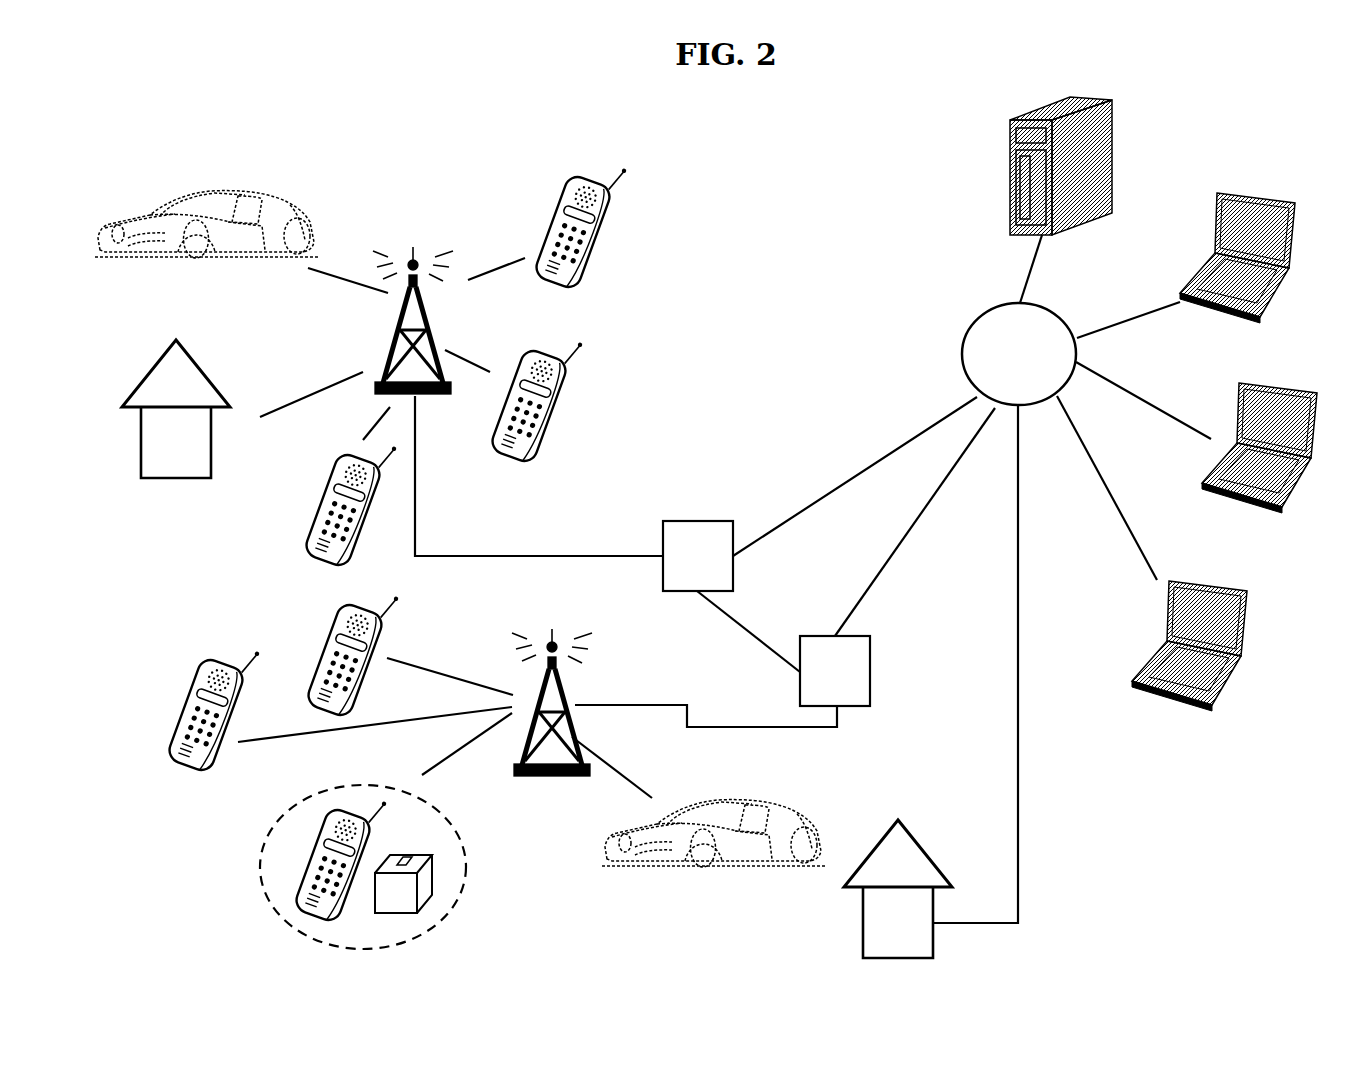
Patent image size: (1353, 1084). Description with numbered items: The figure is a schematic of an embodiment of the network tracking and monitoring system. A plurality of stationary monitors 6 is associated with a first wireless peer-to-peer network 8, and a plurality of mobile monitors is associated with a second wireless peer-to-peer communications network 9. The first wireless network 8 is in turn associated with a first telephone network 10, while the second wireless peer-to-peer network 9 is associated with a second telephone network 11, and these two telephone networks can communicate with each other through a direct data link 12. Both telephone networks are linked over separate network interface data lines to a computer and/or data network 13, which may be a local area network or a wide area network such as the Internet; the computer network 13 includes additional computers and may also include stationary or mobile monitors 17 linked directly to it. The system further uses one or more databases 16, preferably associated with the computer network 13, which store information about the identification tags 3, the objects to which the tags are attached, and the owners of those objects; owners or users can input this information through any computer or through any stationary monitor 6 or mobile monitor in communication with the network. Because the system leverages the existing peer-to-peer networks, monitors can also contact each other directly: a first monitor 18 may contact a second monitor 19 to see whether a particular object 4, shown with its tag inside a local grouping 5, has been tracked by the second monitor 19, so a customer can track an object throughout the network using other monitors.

The identification tag 3 is at (420, 853).
The object 4 is at (434, 887).
The local area 5 is at (353, 861).
The stationary monitor 6 is at (175, 477).
The first wireless peer-to-peer network 8 is at (414, 257).
The second wireless peer-to-peer communications network 9 is at (535, 623).
The first telephone network 10 is at (697, 520).
The second telephone network 11 is at (870, 673).
The direct data link 12 is at (742, 632).
The computer network 13 is at (960, 338).
The database 16 is at (1087, 223).
The stationary or mobile monitor 17 is at (925, 945).
The first monitor 18 is at (600, 222).
The second monitor 19 is at (273, 903).